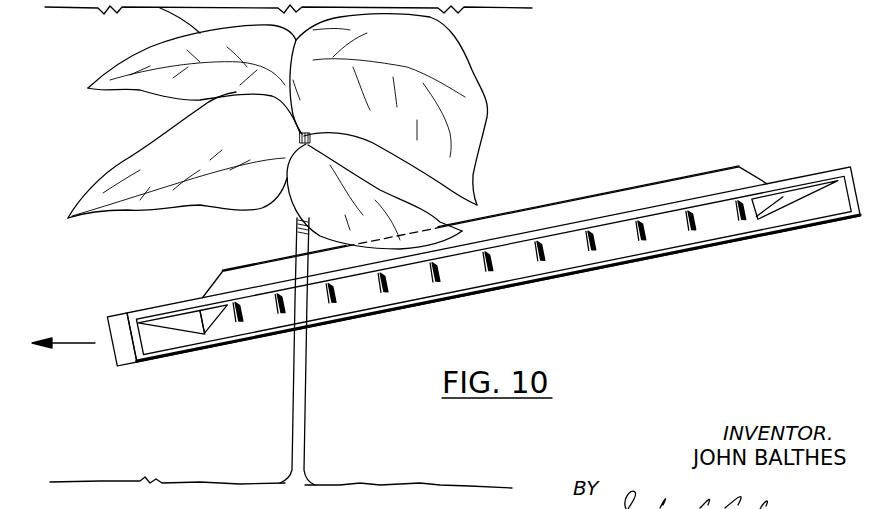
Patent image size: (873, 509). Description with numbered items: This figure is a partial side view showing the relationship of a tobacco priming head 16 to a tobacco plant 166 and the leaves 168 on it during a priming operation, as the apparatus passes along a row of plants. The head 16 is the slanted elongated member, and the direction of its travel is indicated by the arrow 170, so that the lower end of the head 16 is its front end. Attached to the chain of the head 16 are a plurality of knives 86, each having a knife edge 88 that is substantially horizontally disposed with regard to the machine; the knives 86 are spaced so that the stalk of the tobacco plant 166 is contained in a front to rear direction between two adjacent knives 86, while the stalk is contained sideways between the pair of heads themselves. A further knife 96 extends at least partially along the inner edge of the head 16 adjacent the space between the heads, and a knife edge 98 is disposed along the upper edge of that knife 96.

The head 16 is at (483, 245).
The knife 86 is at (583, 243).
The knife edge 88 is at (585, 233).
The knife 96 is at (635, 197).
The knife edge 98 is at (515, 213).
The tobacco plant 166 is at (313, 246).
The leaf 168 is at (465, 98).
The arrow 170 is at (66, 344).